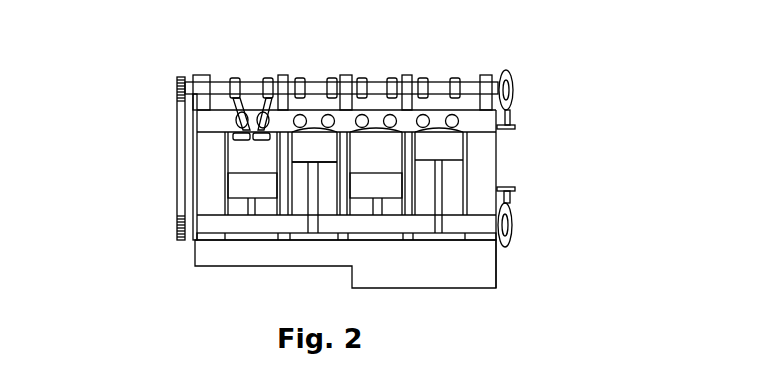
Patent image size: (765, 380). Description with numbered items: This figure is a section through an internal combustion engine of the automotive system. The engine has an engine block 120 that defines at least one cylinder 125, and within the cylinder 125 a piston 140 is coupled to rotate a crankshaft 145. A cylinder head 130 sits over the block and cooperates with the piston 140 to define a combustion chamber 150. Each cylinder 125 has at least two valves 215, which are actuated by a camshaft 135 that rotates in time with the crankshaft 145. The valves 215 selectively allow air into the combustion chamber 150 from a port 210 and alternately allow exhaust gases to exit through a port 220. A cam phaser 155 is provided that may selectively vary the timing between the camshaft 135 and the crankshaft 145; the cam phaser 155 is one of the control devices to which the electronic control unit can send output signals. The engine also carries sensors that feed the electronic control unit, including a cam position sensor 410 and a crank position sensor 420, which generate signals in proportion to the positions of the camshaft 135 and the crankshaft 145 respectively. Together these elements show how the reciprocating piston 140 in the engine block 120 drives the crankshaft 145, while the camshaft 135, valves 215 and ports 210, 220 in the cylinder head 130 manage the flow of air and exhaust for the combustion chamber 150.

The engine block 120 is at (195, 175).
The cylinder 125 is at (403, 105).
The cylinder head 130 is at (230, 132).
The camshaft 135 is at (250, 81).
The piston 140 is at (380, 185).
The crankshaft 145 is at (223, 232).
The combustion chamber 150 is at (455, 133).
The cam phaser 155 is at (183, 80).
The port 210 is at (353, 160).
The valves 215 is at (228, 133).
The port 220 is at (318, 100).
The cam position sensor 410 is at (515, 125).
The crank position sensor 420 is at (512, 190).